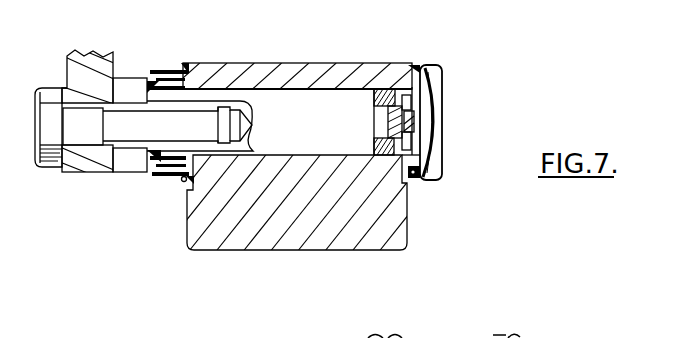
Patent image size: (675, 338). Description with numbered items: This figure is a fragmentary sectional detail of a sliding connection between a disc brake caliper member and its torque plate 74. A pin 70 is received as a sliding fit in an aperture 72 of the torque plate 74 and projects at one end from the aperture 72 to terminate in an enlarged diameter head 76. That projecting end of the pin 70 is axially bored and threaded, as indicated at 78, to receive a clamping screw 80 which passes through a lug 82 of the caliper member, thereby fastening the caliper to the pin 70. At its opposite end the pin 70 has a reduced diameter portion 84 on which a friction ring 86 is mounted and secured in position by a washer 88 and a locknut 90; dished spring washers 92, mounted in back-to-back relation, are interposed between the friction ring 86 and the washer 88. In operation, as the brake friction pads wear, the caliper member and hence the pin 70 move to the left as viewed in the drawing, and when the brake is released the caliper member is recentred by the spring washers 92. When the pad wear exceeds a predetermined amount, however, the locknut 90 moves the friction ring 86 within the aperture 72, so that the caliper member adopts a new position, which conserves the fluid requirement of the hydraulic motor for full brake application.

The pin 70 is at (330, 98).
The aperture 72 is at (281, 86).
The torque plate 74 is at (352, 233).
The enlarged diameter head 76 is at (138, 82).
The axial bore and thread 78 is at (200, 109).
The clamping screw 80 is at (80, 135).
The lug 82 is at (104, 160).
The reduced diameter portion 84 is at (389, 163).
The friction ring 86 is at (384, 92).
The washer 88 is at (408, 143).
The locknut 90 is at (407, 123).
The dished spring washers 92 is at (393, 88).